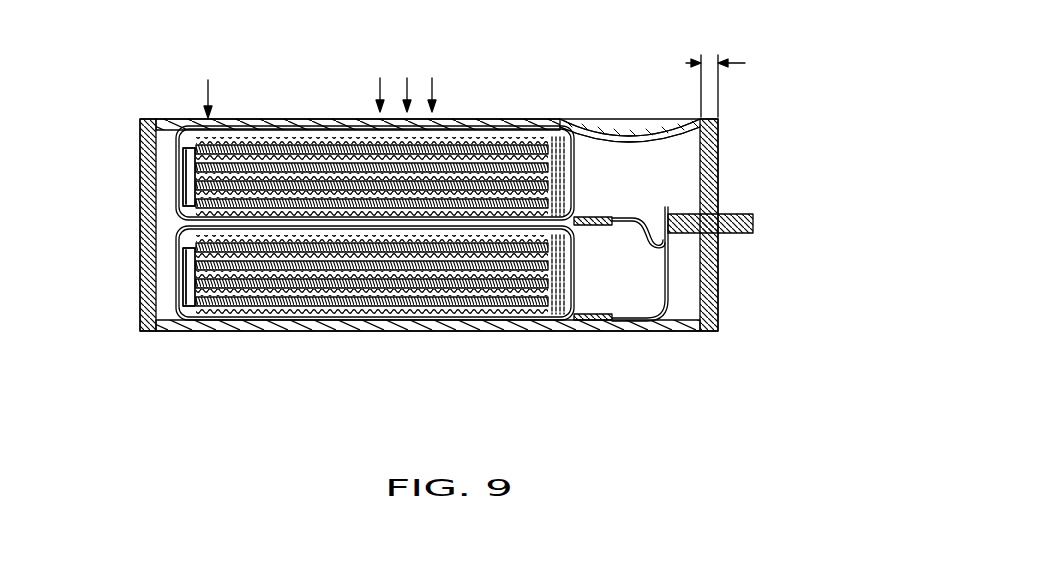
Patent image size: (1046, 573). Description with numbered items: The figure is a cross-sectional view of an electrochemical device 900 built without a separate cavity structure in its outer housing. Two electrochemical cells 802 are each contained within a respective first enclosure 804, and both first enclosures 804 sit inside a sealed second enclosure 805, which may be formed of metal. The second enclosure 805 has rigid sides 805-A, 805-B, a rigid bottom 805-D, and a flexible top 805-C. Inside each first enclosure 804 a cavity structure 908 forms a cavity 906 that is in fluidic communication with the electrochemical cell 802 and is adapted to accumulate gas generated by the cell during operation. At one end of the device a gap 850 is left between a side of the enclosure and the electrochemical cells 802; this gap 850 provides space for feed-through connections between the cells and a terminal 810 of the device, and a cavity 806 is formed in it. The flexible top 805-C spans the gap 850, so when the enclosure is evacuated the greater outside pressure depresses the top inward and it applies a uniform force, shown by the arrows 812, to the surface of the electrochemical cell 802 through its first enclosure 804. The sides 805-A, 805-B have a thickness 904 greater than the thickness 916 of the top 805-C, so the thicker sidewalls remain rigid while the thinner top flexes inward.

The electrochemical device 900 is at (797, 95).
The second enclosure 805 is at (449, 213).
The side 805-A is at (712, 152).
The side 805-B is at (152, 329).
The flexible top 805-C is at (172, 121).
The bottom 805-D is at (631, 332).
The electrochemical cell 802 is at (266, 150).
The first enclosure 804 is at (176, 205).
The cavity 806 is at (673, 170).
The terminal 810 is at (740, 224).
The arrows 812 is at (210, 78).
The gap 850 is at (698, 110).
The thickness 904 is at (740, 62).
The cavity 906 is at (180, 180).
The cavity structure 908 is at (178, 156).
The thickness 916 is at (664, 116).